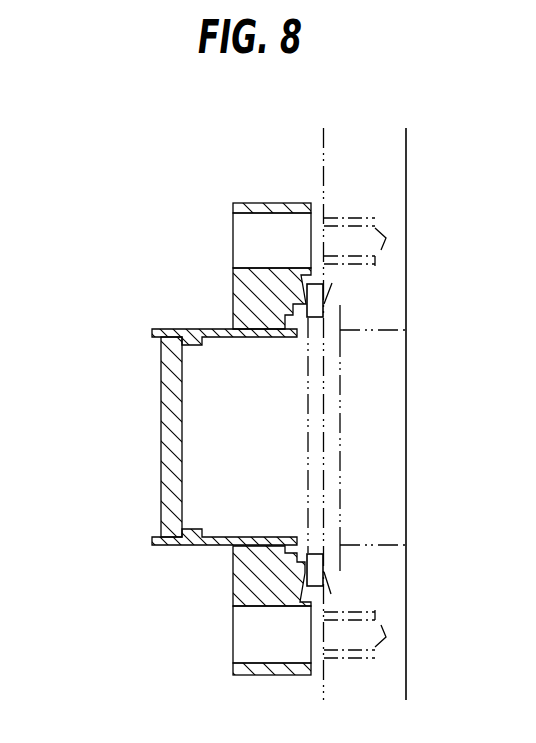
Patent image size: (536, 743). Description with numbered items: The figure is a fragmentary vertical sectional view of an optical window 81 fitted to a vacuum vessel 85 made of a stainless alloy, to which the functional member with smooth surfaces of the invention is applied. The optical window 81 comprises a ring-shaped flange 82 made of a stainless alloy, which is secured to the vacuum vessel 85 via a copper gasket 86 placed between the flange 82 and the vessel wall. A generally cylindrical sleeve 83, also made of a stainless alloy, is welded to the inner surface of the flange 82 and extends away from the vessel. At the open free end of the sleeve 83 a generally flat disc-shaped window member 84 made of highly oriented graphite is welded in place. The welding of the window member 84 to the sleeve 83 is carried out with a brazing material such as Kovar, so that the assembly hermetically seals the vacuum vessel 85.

The optical window 81 is at (133, 416).
The ring-shaped flange 82 is at (253, 201).
The sleeve 83 is at (190, 329).
The window member 84 is at (162, 375).
The vacuum vessel 85 is at (323, 146).
The copper gasket 86 is at (325, 307).